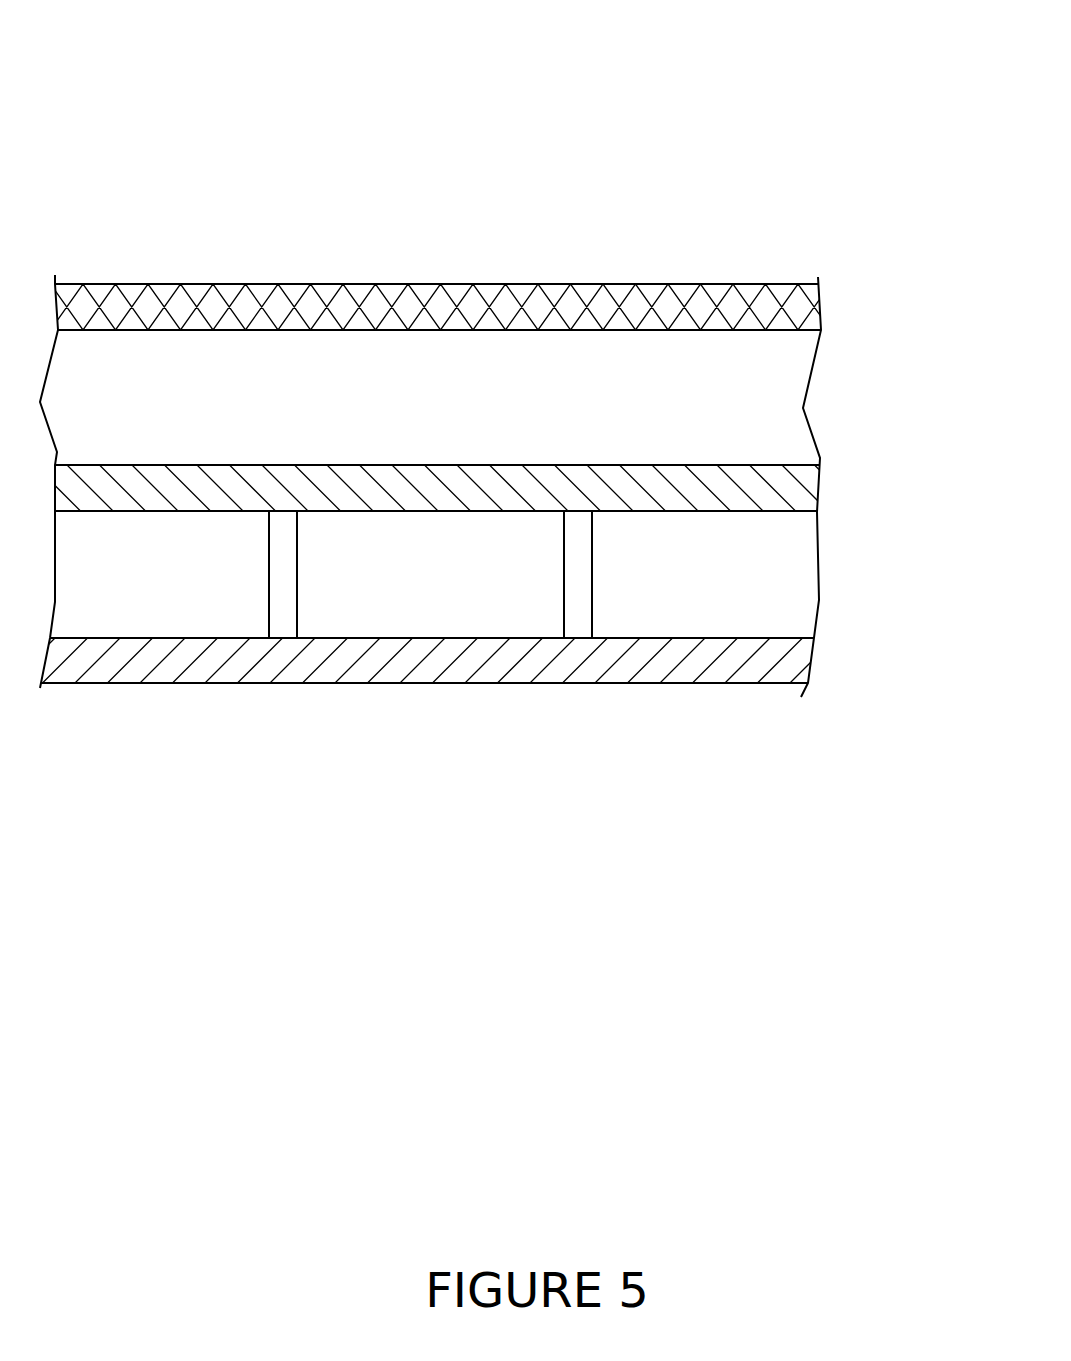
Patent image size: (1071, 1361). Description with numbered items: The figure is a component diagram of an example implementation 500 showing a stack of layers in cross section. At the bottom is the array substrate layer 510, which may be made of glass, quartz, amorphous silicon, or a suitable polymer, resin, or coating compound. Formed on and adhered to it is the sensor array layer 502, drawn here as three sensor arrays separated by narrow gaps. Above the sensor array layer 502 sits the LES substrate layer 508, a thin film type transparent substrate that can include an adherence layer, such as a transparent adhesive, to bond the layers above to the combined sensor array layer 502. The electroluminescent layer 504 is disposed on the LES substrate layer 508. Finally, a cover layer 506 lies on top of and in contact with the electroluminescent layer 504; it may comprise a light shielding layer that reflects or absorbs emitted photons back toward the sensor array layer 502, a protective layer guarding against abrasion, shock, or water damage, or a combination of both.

The example implementation 500 is at (778, 118).
The sensor array layer 502 is at (777, 587).
The electroluminescent layer 504 is at (770, 400).
The cover layer 506 is at (830, 307).
The LES substrate layer 508 is at (817, 488).
The array substrate layer 510 is at (817, 663).